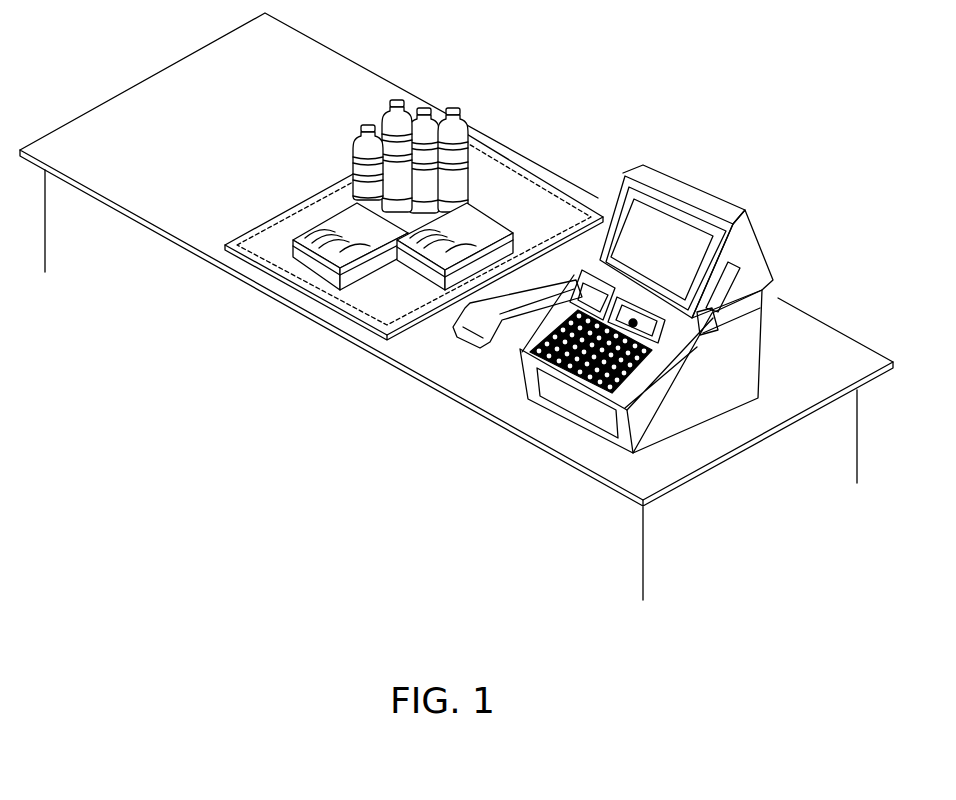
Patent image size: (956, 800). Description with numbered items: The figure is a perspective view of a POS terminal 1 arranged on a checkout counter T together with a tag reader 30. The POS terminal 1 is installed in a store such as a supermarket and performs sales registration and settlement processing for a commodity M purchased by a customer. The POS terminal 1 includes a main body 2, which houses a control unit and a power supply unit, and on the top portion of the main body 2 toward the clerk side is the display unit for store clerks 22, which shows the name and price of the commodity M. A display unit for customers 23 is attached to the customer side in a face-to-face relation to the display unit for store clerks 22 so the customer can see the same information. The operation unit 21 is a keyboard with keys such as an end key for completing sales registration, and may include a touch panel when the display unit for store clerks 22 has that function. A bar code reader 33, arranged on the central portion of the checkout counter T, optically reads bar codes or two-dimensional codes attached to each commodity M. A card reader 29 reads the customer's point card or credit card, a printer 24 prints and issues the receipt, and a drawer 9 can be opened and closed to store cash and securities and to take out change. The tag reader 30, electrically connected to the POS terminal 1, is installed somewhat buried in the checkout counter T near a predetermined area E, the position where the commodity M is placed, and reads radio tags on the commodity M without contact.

The POS terminal 1 is at (643, 321).
The main body 2 is at (755, 308).
The drawer 9 is at (533, 407).
The operation unit 21 is at (609, 406).
The display unit for store clerks 22 is at (633, 215).
The display unit for customers 23 is at (678, 205).
The printer 24 is at (568, 273).
The card reader 29 is at (683, 347).
The tag reader 30 is at (377, 307).
The bar code reader 33 is at (455, 336).
The predetermined area E is at (414, 256).
The commodity M is at (458, 107).
The checkout counter T is at (543, 428).